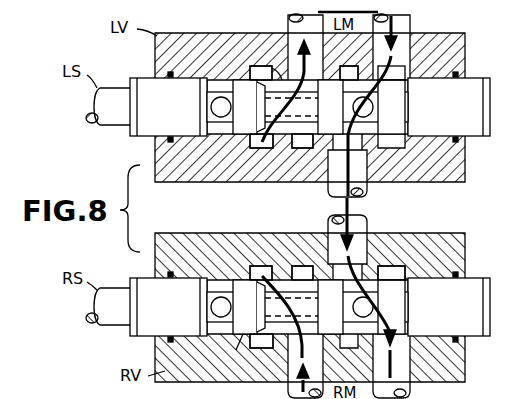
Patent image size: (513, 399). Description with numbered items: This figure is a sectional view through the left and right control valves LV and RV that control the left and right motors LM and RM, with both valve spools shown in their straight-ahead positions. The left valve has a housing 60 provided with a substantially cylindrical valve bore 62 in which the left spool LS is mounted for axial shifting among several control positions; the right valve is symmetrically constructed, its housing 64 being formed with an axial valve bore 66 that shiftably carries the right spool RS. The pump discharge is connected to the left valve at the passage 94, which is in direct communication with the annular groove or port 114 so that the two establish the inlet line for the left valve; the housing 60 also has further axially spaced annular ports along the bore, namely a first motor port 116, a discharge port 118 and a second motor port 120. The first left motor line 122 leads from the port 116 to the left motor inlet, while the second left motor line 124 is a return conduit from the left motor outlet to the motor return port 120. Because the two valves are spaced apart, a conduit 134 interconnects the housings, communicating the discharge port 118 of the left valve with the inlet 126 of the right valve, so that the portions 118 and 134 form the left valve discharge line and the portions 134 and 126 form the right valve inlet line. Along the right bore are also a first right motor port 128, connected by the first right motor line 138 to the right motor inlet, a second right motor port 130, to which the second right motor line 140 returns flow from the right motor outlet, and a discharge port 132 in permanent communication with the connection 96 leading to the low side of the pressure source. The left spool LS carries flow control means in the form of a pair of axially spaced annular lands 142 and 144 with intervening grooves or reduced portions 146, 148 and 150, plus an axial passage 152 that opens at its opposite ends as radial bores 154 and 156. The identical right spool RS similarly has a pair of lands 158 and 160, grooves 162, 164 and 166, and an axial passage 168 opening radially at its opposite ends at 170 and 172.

The housing 60 is at (456, 44).
The valve bore 62 is at (456, 79).
The housing 64 is at (456, 246).
The valve bore 66 is at (456, 279).
The line or passage 94 is at (262, 144).
The connection 96 is at (262, 268).
The annular groove or port 114 is at (252, 76).
The first motor port 116 is at (292, 66).
The discharge port 118 is at (350, 76).
The second motor port 120 is at (404, 66).
The first left motor line 122 is at (290, 26).
The second left motor line 124 is at (400, 30).
The inlet 126 is at (360, 258).
The first right motor port 128 is at (398, 270).
The second right motor port 130 is at (302, 272).
The discharge port 132 is at (250, 278).
The conduit or line 134 is at (362, 187).
The first right motor line 138 is at (405, 390).
The second right motor line 140 is at (290, 390).
The annular land 142 is at (235, 81).
The annular land 144 is at (330, 131).
The groove or reduced portion 146 is at (243, 139).
The groove or reduced portion 148 is at (248, 80).
The groove or reduced portion 150 is at (398, 92).
The axial passage 152 is at (305, 108).
The radial bore 154 is at (214, 107).
The radial bore 156 is at (372, 110).
The land 158 is at (245, 338).
The land 160 is at (318, 336).
The groove 162 is at (226, 332).
The groove 164 is at (266, 270).
The groove 166 is at (398, 292).
The axial passage 168 is at (305, 308).
The radial opening 170 is at (214, 307).
The radial opening 172 is at (372, 310).